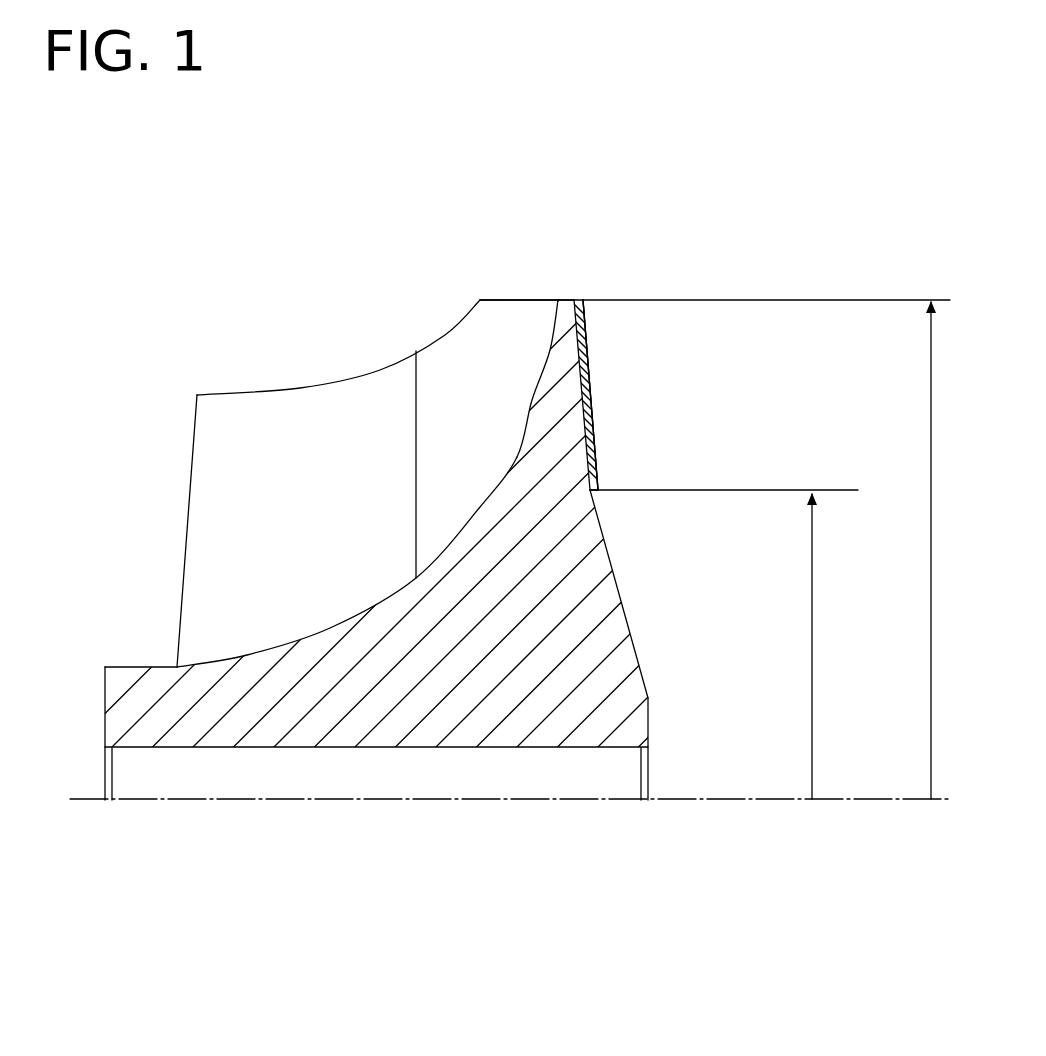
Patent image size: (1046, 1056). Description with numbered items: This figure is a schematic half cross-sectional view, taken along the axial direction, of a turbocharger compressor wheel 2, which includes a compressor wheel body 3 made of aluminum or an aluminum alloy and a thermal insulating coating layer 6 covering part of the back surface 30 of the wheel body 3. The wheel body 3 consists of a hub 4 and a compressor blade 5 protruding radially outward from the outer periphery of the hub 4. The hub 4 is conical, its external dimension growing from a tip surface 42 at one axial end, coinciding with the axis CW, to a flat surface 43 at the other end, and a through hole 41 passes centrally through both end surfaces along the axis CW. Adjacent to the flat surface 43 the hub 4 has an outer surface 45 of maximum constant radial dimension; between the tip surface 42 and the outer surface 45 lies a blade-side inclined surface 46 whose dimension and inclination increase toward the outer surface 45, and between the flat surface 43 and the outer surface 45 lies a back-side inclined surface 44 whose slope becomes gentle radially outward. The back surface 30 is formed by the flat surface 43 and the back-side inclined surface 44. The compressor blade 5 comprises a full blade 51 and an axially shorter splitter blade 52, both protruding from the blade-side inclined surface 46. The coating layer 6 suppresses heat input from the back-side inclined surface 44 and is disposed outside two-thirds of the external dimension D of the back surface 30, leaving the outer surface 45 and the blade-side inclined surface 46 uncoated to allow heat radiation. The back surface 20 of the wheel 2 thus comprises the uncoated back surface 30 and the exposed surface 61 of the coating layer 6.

The compressor wheel 2 is at (193, 223).
The compressor wheel body 3 is at (332, 216).
The hub 4 is at (551, 345).
The compressor blade 5 is at (412, 259).
The full blade 51 is at (297, 388).
The splitter blade 52 is at (445, 337).
The outer surface 45 is at (567, 300).
The thermal insulating coating layer 6 is at (592, 362).
The surface of the thermal insulating coating layer 61 is at (592, 432).
The back surface of the compressor wheel 20 is at (590, 395).
The back surface of the compressor wheel body 30 is at (725, 585).
The back-side inclined surface 44 is at (619, 596).
The flat surface 43 is at (650, 722).
The blade-side inclined surface 46 is at (247, 657).
The tip surface 42 is at (105, 705).
The through hole 41 is at (327, 748).
The external dimension of the back surface D is at (946, 550).
The axis of the compressor wheel body CW is at (482, 800).